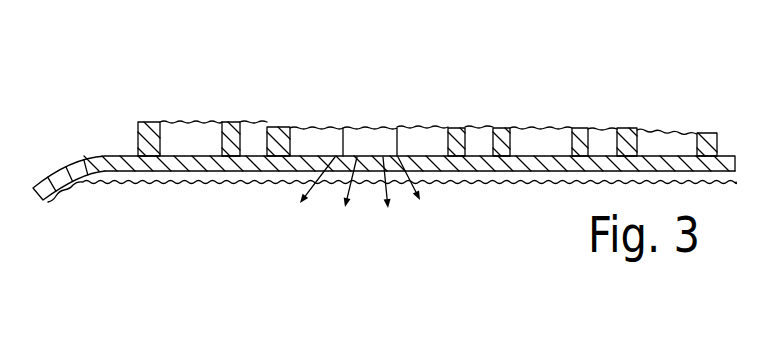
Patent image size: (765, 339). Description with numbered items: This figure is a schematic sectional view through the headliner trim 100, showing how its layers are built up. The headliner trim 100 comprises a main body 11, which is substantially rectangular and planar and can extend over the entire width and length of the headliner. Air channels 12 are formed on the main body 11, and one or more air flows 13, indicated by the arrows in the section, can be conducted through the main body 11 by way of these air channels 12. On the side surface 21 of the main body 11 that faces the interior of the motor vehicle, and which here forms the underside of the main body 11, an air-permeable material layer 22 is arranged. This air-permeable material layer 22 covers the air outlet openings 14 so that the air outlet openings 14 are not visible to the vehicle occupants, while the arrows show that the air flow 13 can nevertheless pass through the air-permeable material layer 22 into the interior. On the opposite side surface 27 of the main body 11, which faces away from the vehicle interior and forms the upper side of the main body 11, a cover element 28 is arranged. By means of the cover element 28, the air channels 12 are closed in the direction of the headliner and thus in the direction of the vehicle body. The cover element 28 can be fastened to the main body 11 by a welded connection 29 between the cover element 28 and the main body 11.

The headliner trim 100 is at (176, 79).
The main body 11 is at (113, 175).
The air channels 12 is at (177, 127).
The air flow 13 is at (393, 177).
The air outlet openings 14 is at (362, 130).
The side surface 21 is at (188, 175).
The air-permeable material layer 22 is at (223, 183).
The side surface 27 is at (140, 120).
The cover element 28 is at (308, 128).
The welded connection 29 is at (278, 124).